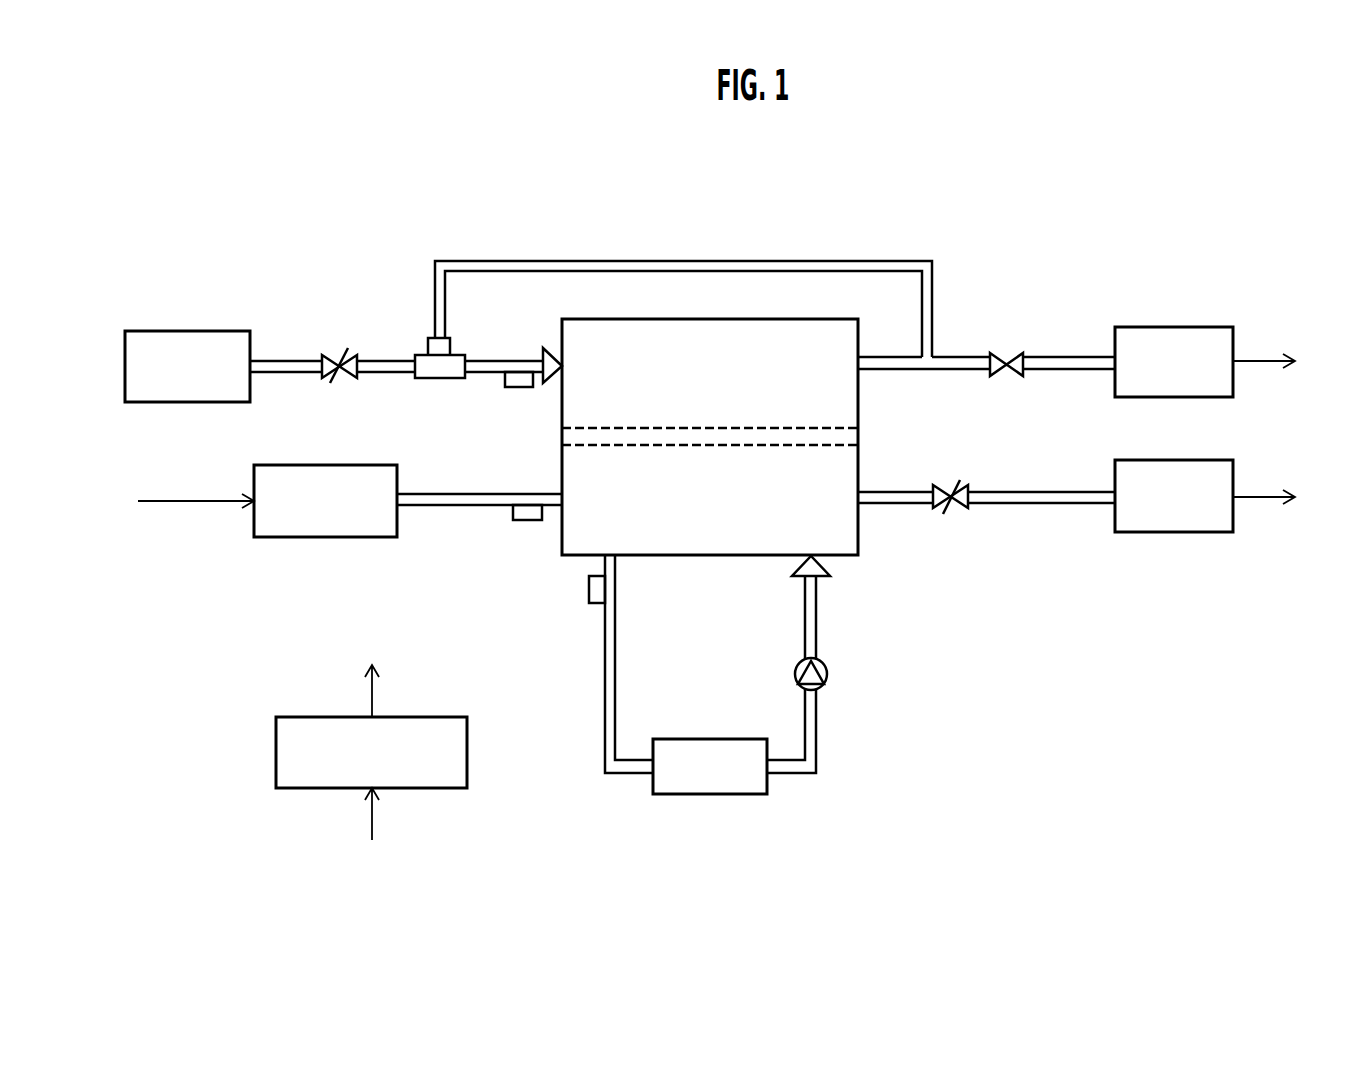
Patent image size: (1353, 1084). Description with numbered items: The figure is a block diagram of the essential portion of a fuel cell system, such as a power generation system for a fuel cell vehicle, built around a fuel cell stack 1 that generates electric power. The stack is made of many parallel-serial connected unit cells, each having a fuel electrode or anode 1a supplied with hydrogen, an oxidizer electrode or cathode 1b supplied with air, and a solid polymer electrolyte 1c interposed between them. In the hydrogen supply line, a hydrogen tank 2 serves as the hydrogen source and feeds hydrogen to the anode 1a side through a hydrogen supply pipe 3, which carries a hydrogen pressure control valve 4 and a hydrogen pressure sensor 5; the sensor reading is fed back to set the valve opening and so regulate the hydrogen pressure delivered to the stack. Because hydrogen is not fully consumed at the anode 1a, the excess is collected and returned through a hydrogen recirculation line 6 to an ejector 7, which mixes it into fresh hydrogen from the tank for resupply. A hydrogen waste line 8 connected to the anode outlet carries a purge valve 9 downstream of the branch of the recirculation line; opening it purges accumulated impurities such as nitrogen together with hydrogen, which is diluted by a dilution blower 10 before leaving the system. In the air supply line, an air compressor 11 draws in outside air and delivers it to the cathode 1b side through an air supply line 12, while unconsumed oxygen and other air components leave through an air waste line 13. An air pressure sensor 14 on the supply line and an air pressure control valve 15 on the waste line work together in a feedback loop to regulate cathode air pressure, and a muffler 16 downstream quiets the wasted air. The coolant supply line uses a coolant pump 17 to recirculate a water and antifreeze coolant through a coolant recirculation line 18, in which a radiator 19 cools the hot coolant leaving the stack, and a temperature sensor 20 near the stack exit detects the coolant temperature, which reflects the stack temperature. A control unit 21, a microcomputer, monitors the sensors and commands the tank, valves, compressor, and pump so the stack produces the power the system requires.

The fuel cell stack 1 is at (735, 302).
The fuel electrode (anode) 1a is at (822, 330).
The oxidizer electrode (cathode) 1b is at (857, 530).
The solid polymer electrolyte 1c is at (857, 430).
The hydrogen tank 2 is at (198, 331).
The hydrogen supply pipe 3 is at (375, 360).
The hydrogen pressure control valve 4 is at (348, 379).
The hydrogen pressure sensor 5 is at (516, 388).
The hydrogen recirculation line 6 is at (682, 259).
The ejector 7 is at (452, 351).
The hydrogen waste line 8 is at (953, 357).
The purge valve 9 is at (1014, 353).
The dilution blower 10 is at (1175, 327).
The air compressor 11 is at (303, 465).
The air supply line 12 is at (437, 495).
The air waste line 13 is at (1000, 492).
The air pressure sensor 14 is at (527, 521).
The air pressure control valve 15 is at (956, 508).
The muffler 16 is at (1175, 460).
The coolant pump 17 is at (828, 672).
The coolant recirculation line 18 is at (817, 606).
The radiator 19 is at (705, 795).
The temperature sensor 20 is at (589, 587).
The control unit 21 is at (443, 716).